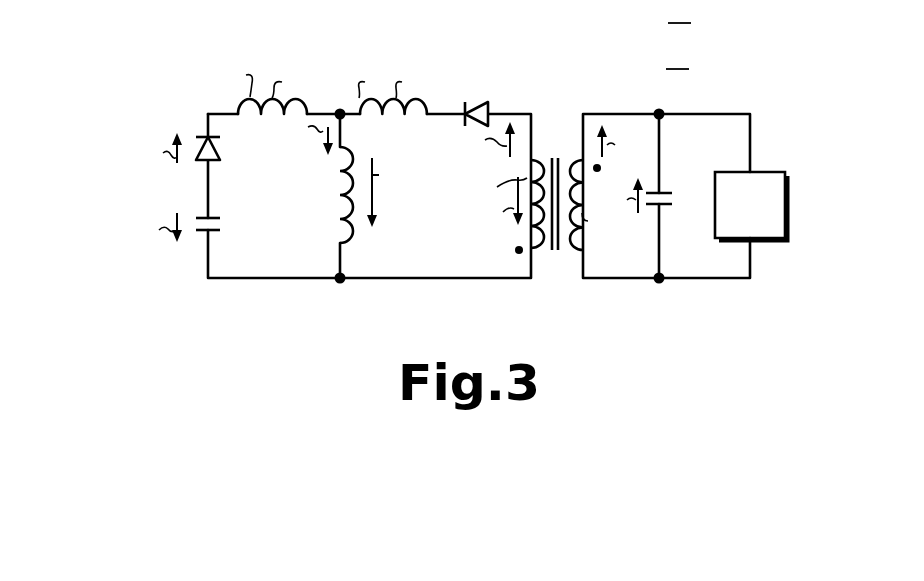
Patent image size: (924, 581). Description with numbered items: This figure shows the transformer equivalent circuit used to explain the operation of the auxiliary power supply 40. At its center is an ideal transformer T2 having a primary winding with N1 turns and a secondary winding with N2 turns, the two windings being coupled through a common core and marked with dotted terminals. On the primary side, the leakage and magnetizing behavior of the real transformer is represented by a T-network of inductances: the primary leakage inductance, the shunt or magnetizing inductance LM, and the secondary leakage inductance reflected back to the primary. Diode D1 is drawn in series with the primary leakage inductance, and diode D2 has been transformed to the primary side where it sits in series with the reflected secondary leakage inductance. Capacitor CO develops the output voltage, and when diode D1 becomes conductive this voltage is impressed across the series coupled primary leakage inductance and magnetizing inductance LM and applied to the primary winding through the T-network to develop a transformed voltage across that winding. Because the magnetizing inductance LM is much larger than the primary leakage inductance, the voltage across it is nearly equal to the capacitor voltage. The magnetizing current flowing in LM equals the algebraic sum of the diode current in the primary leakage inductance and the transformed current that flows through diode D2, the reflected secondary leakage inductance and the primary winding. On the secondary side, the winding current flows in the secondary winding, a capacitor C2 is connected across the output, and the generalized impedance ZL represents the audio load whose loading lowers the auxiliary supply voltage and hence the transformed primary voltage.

The auxiliary power supply 40 is at (495, 165).
The diode D1 is at (221, 143).
The capacitor CO is at (236, 224).
The diode D2 is at (473, 98).
The magnetizing inductance LM is at (340, 227).
The ideal transformer T2 is at (565, 108).
The number of turns N1 is at (519, 237).
The number of turns N2 is at (584, 245).
The capacitor C2 is at (672, 203).
The generalized impedance ZL is at (751, 206).